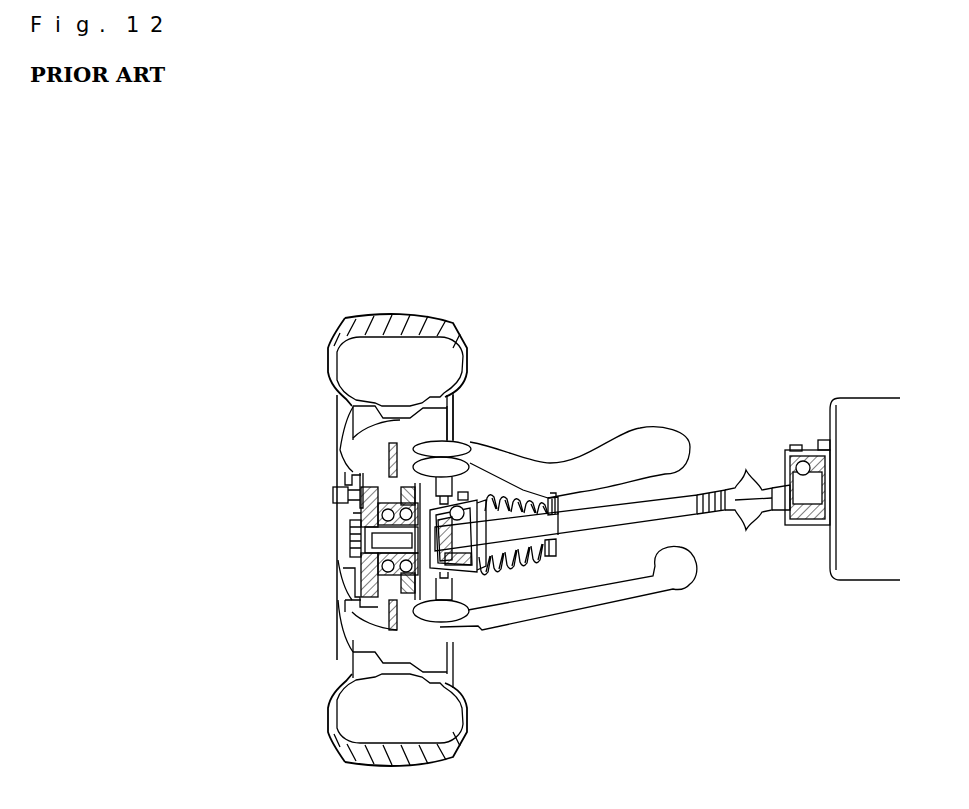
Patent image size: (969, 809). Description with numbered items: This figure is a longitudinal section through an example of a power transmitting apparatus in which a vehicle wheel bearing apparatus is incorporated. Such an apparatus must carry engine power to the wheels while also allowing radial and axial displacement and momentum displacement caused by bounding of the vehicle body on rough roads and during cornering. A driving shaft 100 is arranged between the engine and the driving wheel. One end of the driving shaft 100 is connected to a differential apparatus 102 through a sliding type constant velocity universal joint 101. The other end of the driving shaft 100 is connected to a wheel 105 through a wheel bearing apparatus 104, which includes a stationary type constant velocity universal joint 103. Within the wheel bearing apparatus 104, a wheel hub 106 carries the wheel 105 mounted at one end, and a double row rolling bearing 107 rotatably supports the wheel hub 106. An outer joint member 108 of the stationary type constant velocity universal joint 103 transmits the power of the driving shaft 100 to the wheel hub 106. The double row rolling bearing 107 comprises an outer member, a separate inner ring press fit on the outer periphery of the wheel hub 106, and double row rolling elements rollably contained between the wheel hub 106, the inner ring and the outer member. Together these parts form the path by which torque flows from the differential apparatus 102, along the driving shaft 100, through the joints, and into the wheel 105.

The driving shaft 100 is at (602, 532).
The sliding type constant velocity universal joint 101 is at (784, 442).
The differential apparatus 102 is at (862, 412).
The stationary type constant velocity universal joint 103 is at (498, 578).
The wheel bearing apparatus 104 is at (391, 493).
The wheel 105 is at (453, 410).
The wheel hub 106 is at (360, 560).
The double row rolling bearing 107 is at (358, 592).
The outer joint member 108 is at (355, 608).